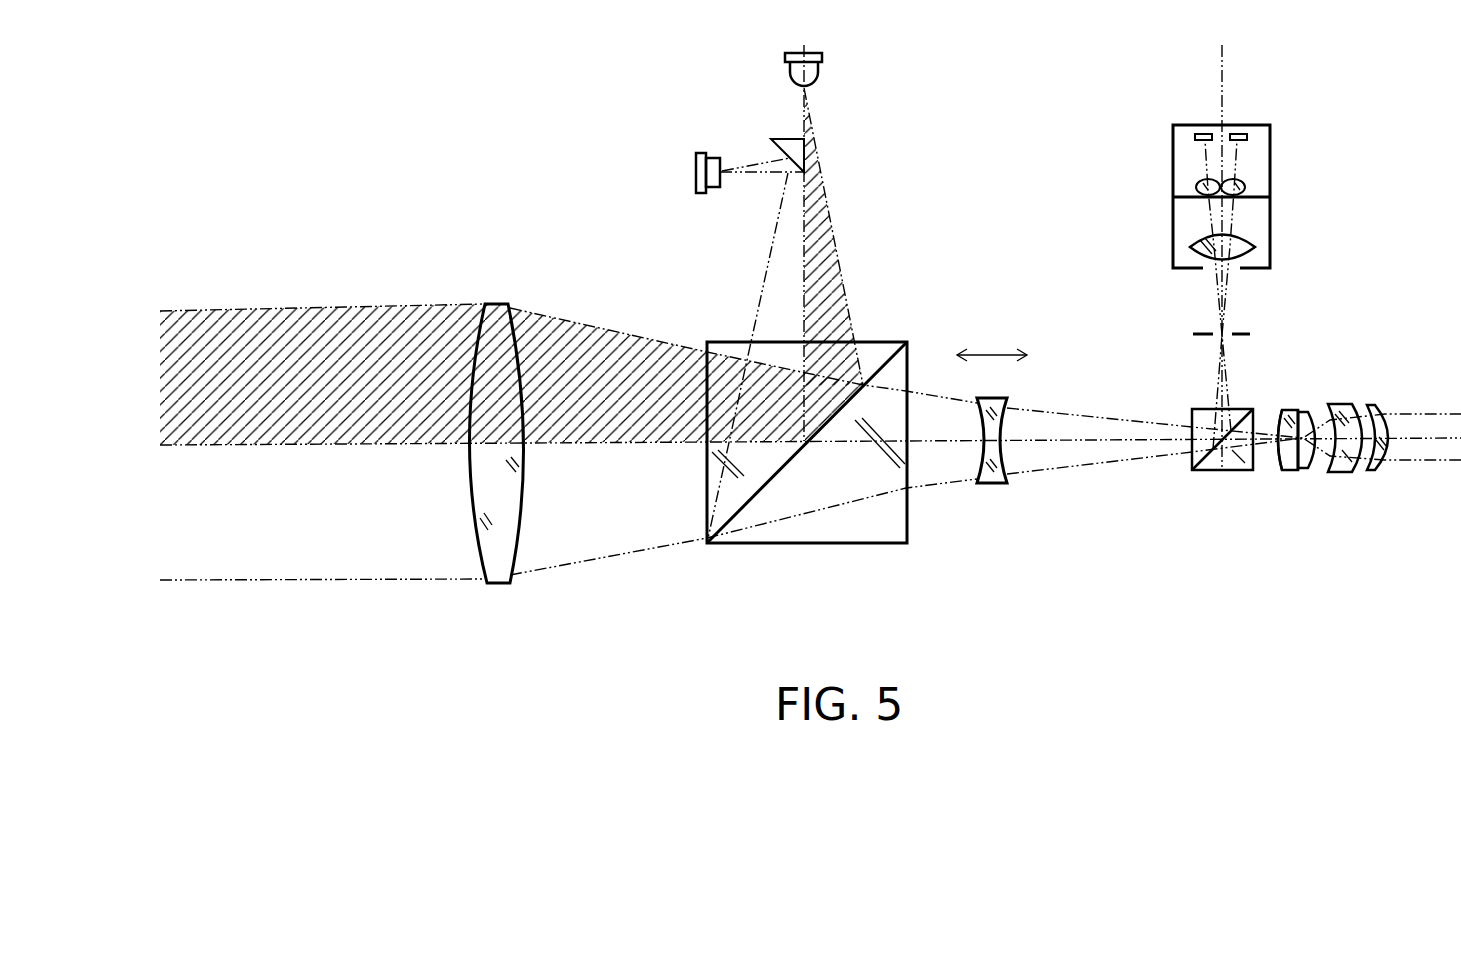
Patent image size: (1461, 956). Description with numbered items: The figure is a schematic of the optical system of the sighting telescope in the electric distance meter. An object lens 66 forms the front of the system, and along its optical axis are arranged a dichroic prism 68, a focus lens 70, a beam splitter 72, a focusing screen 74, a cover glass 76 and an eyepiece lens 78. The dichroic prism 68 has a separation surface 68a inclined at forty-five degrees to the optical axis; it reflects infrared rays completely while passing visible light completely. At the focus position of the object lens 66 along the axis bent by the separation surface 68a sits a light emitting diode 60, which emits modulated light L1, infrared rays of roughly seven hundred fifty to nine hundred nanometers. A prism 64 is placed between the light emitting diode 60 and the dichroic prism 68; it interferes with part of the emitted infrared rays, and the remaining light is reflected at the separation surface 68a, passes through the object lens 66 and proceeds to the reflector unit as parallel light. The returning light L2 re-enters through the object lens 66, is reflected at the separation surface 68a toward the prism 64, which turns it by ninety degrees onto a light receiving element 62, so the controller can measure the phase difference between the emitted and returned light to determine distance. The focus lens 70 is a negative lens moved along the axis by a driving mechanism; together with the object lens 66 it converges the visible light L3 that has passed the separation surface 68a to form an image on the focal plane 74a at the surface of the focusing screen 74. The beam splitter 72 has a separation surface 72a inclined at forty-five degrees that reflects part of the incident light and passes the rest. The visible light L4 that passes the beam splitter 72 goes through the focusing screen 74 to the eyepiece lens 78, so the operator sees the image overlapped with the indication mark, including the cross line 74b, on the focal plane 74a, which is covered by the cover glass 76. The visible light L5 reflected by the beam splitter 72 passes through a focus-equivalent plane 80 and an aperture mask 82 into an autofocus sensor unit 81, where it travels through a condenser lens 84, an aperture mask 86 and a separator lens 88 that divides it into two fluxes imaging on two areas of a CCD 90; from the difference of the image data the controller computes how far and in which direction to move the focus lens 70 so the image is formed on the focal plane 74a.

The light emitting diode 60 is at (814, 68).
The light receiving element 62 is at (696, 175).
The prism 64 is at (806, 153).
The object lens 66 is at (503, 553).
The dichroic prism 68 is at (823, 527).
The separation surface 68a is at (883, 344).
The focus lens 70 is at (1007, 466).
The beam splitter 72 is at (1223, 470).
The separation surface 72a is at (1192, 458).
The focusing screen 74 is at (1290, 472).
The focal plane 74a is at (1305, 413).
The cross line 74b is at (1281, 452).
The cover glass 76 is at (1308, 472).
The eyepiece lens 78 is at (1398, 396).
The focus-equivalent plane 80 is at (1233, 334).
The autofocus sensor unit 81 is at (1188, 123).
The aperture mask 82 is at (1210, 270).
The condenser lens 84 is at (1247, 241).
The aperture mask 86 is at (1199, 182).
The separator lens 88 is at (1243, 179).
The CCD 90 is at (1237, 132).
The modulated light L1 is at (828, 260).
The returning light L2 is at (778, 303).
The visible light L3 is at (922, 466).
The visible light L4 is at (1417, 449).
The visible light L5 is at (1215, 386).